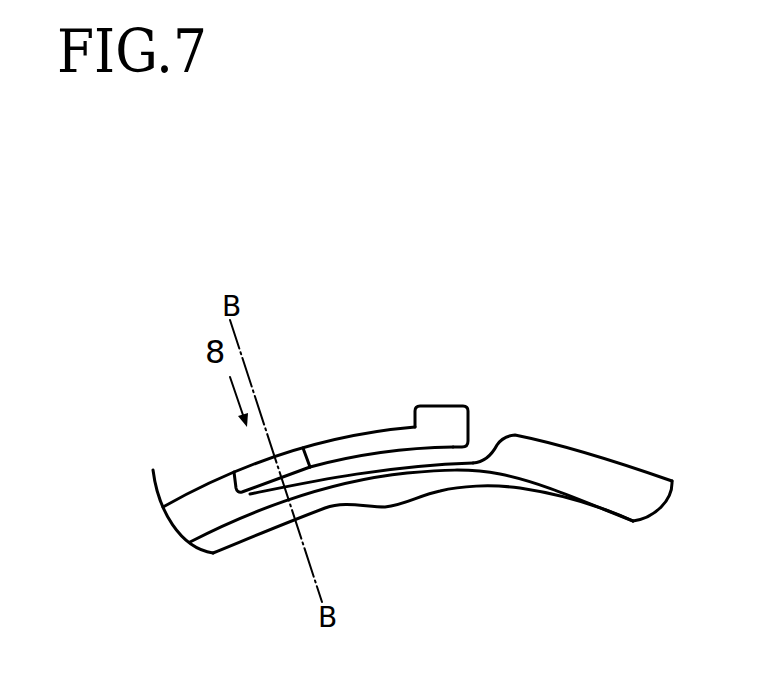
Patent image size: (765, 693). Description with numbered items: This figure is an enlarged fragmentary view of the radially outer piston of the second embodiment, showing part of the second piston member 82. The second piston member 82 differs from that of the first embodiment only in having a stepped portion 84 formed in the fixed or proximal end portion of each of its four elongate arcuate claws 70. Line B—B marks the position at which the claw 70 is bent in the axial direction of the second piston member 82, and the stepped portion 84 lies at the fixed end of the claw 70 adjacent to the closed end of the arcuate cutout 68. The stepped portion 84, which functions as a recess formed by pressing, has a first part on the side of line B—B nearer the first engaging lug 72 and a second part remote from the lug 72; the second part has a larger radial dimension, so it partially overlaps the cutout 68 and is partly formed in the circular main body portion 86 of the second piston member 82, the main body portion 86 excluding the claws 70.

The arcuate cutout 68 is at (470, 462).
The elongate arcuate claw 70 is at (362, 405).
The first engaging lug 72 is at (447, 422).
The second piston member 82 is at (558, 262).
The stepped portion 84 is at (244, 476).
The circular main body portion 86 is at (407, 497).